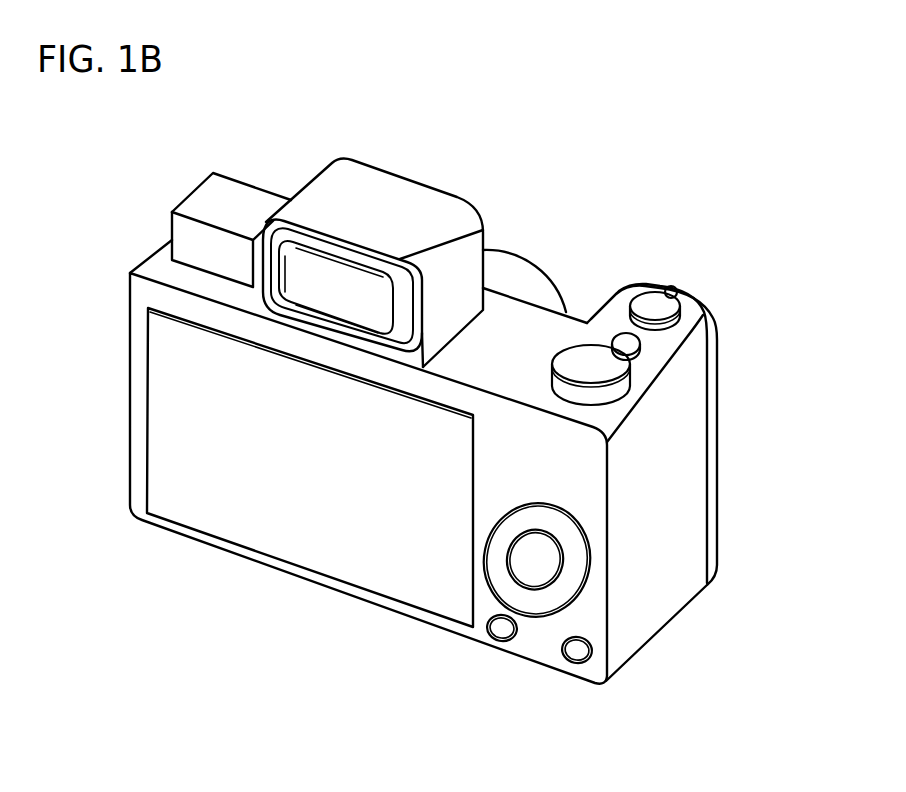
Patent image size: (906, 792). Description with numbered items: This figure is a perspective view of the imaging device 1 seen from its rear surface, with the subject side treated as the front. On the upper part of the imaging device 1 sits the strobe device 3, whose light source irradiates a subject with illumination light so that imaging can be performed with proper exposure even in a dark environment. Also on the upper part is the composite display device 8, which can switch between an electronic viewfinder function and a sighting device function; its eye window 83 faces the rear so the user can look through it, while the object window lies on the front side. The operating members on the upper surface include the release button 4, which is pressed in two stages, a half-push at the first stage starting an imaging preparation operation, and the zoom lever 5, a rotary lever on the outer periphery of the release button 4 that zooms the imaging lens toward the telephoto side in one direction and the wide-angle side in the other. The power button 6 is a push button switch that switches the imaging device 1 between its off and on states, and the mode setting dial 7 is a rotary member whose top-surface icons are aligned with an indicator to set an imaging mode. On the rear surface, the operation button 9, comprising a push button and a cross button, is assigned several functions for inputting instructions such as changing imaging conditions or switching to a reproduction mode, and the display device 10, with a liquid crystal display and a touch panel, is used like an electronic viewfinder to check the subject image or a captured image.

The imaging device 1 is at (110, 323).
The strobe device 3 is at (202, 202).
The release button 4 is at (668, 307).
The zoom lever 5 is at (672, 286).
The power button 6 is at (625, 343).
The mode setting dial 7 is at (605, 373).
The composite display device 8 is at (435, 197).
The eye window 83 is at (310, 272).
The operation button 9 is at (577, 582).
The display device 10 is at (263, 530).